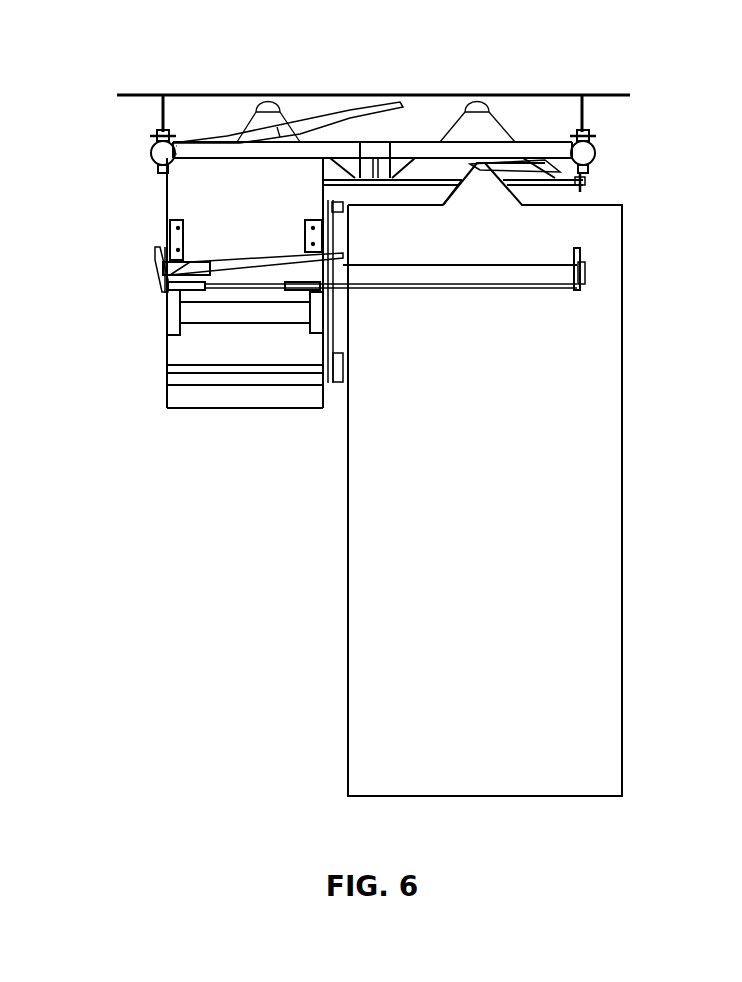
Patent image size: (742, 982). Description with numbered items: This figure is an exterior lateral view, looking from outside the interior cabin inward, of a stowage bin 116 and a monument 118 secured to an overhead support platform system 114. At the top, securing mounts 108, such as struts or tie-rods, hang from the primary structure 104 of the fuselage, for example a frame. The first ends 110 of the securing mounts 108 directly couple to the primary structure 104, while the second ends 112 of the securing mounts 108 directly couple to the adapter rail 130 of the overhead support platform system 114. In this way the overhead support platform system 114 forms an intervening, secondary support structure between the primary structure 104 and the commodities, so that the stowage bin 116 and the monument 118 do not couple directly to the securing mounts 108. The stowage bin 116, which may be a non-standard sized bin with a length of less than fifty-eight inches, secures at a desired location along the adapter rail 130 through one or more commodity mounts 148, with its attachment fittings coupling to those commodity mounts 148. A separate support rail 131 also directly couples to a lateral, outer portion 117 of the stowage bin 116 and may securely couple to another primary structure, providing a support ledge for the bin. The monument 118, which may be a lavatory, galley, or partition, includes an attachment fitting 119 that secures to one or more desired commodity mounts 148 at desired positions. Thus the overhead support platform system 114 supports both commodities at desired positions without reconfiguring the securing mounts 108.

The primary structure 104 is at (363, 95).
The securing mounts 108 is at (162, 105).
The first ends 110 is at (163, 94).
The second ends 112 is at (155, 134).
The overhead support platform system 114 is at (549, 130).
The stowage bin 116 is at (245, 408).
The lateral, outer portion 117 is at (210, 225).
The monument 118 is at (622, 433).
The attachment fitting 119 is at (493, 196).
The adapter rail 130 is at (377, 148).
The support rail 131 is at (527, 263).
The commodity mounts 148 is at (192, 159).